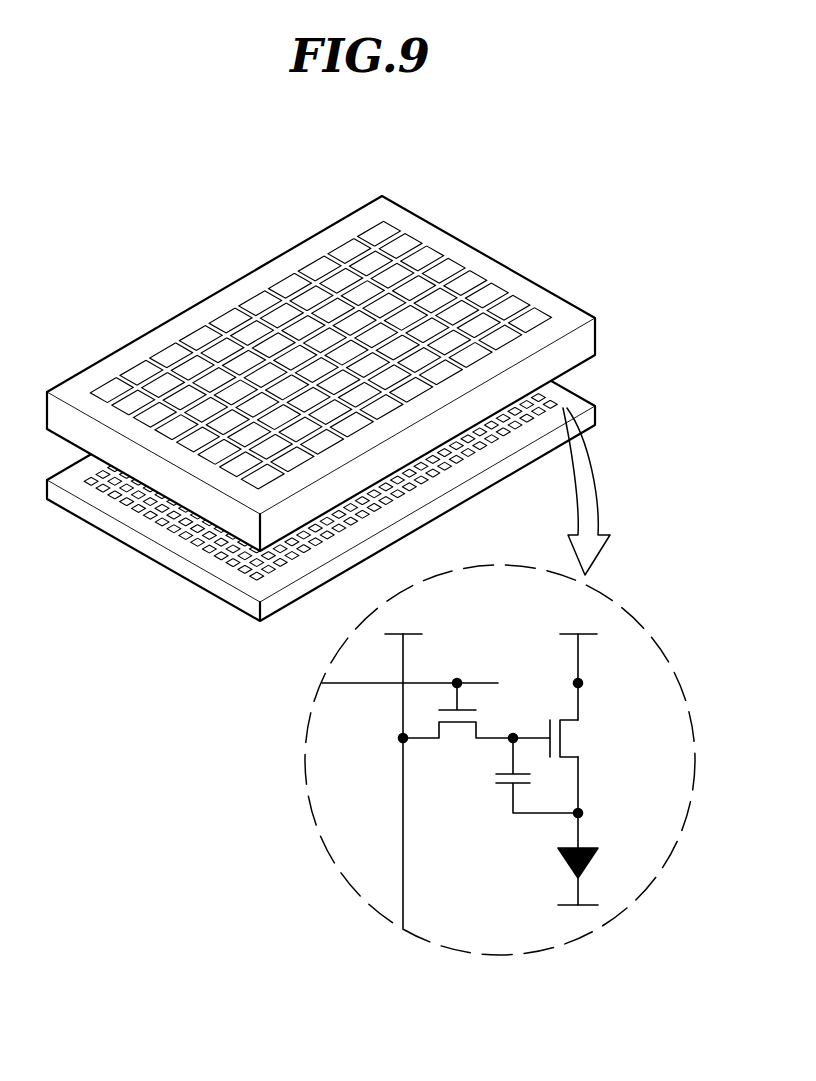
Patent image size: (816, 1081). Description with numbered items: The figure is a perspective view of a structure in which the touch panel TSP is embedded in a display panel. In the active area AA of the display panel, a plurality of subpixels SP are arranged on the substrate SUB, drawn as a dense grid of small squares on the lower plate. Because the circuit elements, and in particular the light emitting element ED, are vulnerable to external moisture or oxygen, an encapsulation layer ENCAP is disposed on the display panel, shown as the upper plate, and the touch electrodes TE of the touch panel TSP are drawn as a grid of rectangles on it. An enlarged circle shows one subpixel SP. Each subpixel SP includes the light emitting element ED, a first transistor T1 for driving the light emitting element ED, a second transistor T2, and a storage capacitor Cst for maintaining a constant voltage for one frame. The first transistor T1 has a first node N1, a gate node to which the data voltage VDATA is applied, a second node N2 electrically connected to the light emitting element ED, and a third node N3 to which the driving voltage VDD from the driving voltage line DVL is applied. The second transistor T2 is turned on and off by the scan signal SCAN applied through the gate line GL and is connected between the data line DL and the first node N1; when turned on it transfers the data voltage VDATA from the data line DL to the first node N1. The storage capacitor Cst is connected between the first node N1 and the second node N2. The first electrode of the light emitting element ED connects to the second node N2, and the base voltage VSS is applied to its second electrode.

The active area AA is at (80, 213).
The touch panel TSP is at (203, 271).
The touch electrode TE is at (523, 302).
The encapsulation layer ENCAP is at (588, 340).
The subpixel SP is at (566, 406).
The substrate SUB is at (588, 419).
The data voltage VDATA is at (400, 623).
The data line DL is at (392, 781).
The gate line GL is at (410, 696).
The scan signal SCAN is at (455, 672).
The second transistor T2 is at (458, 719).
The first node N1 is at (517, 728).
The storage capacitor Cst is at (537, 775).
The driving voltage VDD is at (577, 623).
The driving voltage line DVL is at (559, 741).
The third node N3 is at (593, 684).
The first transistor T1 is at (553, 738).
The second node N2 is at (594, 815).
The light emitting element ED is at (567, 876).
The base voltage VSS is at (578, 917).